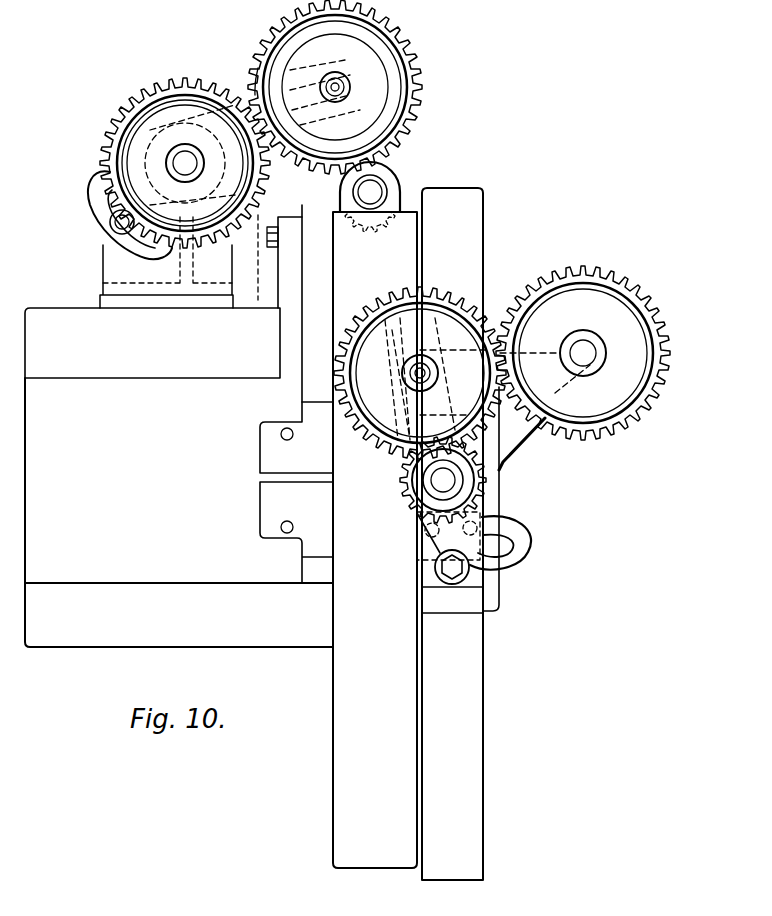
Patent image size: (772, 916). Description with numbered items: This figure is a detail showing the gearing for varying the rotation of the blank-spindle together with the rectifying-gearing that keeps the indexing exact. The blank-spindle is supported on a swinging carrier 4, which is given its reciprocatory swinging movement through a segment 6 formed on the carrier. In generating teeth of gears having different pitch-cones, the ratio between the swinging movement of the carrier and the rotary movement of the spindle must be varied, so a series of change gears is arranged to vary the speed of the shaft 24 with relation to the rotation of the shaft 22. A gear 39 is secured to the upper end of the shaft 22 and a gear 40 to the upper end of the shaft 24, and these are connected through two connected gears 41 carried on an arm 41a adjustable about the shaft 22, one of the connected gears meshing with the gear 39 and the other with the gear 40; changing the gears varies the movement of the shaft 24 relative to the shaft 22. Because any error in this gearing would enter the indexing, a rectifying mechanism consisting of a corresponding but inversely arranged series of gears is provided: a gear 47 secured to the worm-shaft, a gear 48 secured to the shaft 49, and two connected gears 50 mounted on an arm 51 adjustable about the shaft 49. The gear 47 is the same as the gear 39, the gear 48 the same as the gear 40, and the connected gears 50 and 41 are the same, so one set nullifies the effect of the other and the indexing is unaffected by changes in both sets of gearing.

The swinging carrier 4 is at (472, 600).
The segment 6 is at (468, 750).
The shaft 22 is at (440, 482).
The shaft 24 is at (590, 355).
The gear 39 is at (500, 480).
The gear 40 is at (600, 428).
The connected gears 41 is at (465, 305).
The arm 41a is at (515, 517).
The gear 47 is at (405, 183).
The gear 48 is at (186, 82).
The shaft 49 is at (180, 163).
The connected gears 50 is at (390, 62).
The arm 51 is at (262, 75).